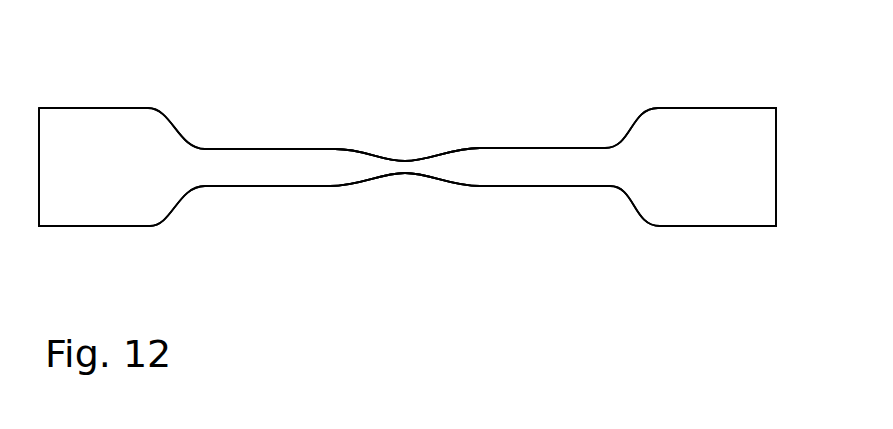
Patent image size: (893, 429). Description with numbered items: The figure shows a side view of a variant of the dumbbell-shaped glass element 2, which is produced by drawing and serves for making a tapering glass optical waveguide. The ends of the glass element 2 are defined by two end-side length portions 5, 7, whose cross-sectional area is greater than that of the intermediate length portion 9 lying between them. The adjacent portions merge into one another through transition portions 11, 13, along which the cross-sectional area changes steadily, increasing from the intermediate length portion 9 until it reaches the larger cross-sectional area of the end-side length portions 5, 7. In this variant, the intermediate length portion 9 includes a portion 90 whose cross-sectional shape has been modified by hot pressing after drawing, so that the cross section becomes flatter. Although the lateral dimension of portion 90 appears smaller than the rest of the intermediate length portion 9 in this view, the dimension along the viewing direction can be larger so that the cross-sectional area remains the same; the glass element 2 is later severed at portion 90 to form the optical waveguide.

The glass element 2 is at (358, 254).
The end-side length portion 5 is at (95, 226).
The end-side length portion 7 is at (697, 226).
The intermediate length portion 9 is at (492, 187).
The transition portion 11 is at (175, 203).
The transition portion 13 is at (630, 202).
The portion with modified cross-sectional shape 90 is at (410, 160).